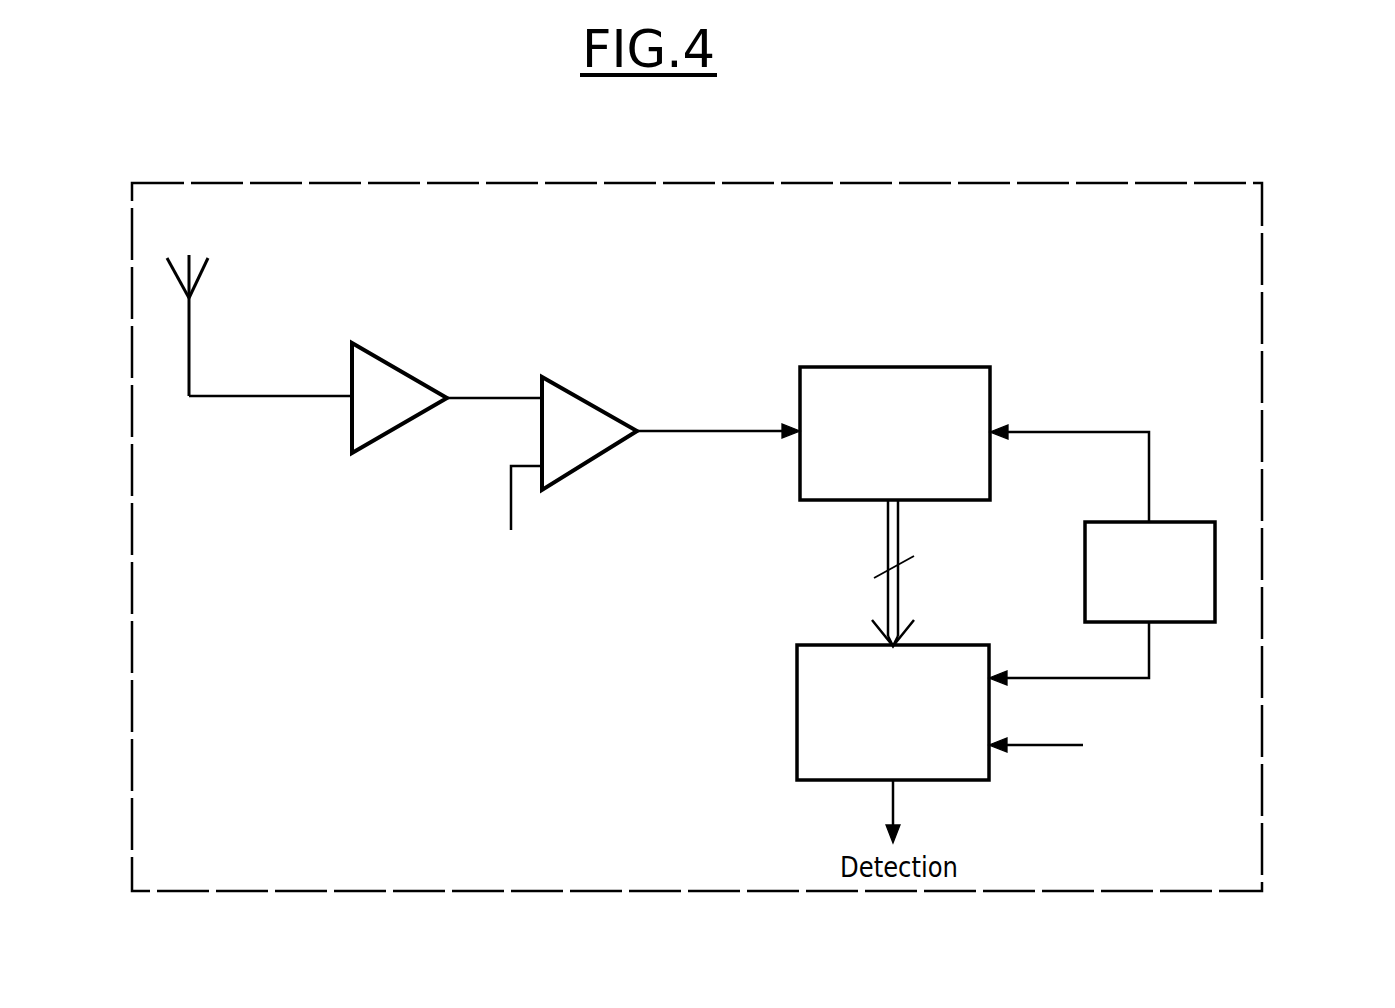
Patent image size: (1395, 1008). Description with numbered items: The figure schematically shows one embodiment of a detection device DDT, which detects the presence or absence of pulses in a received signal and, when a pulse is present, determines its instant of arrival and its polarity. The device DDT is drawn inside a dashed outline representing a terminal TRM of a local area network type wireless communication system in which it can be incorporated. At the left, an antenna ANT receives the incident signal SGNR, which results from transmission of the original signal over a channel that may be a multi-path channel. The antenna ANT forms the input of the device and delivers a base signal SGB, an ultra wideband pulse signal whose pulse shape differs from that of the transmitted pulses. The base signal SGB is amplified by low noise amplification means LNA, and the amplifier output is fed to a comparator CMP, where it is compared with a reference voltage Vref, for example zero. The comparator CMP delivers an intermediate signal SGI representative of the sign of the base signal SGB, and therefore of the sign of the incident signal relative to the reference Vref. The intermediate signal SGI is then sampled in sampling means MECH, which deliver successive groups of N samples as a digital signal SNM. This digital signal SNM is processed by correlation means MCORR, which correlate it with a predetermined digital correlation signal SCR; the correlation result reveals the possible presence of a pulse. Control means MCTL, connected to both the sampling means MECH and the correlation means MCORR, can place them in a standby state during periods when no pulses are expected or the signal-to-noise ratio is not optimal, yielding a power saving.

The terminal TRM is at (1262, 313).
The incident signal SGNR is at (160, 218).
The antenna ANT is at (206, 266).
The base signal SGB is at (281, 396).
The low noise amplification means LNA is at (399, 398).
The comparator CMP is at (589, 433).
The reference voltage Vref is at (512, 515).
The intermediate signal SGI is at (702, 431).
The detection device DDT is at (866, 289).
The sampling means MECH is at (895, 433).
The digital signal SNM is at (887, 541).
The number of samples N is at (903, 563).
The control means MCTL is at (1102, 555).
The correlation means MCORR is at (893, 712).
The predetermined digital correlation signal SCR is at (1072, 746).